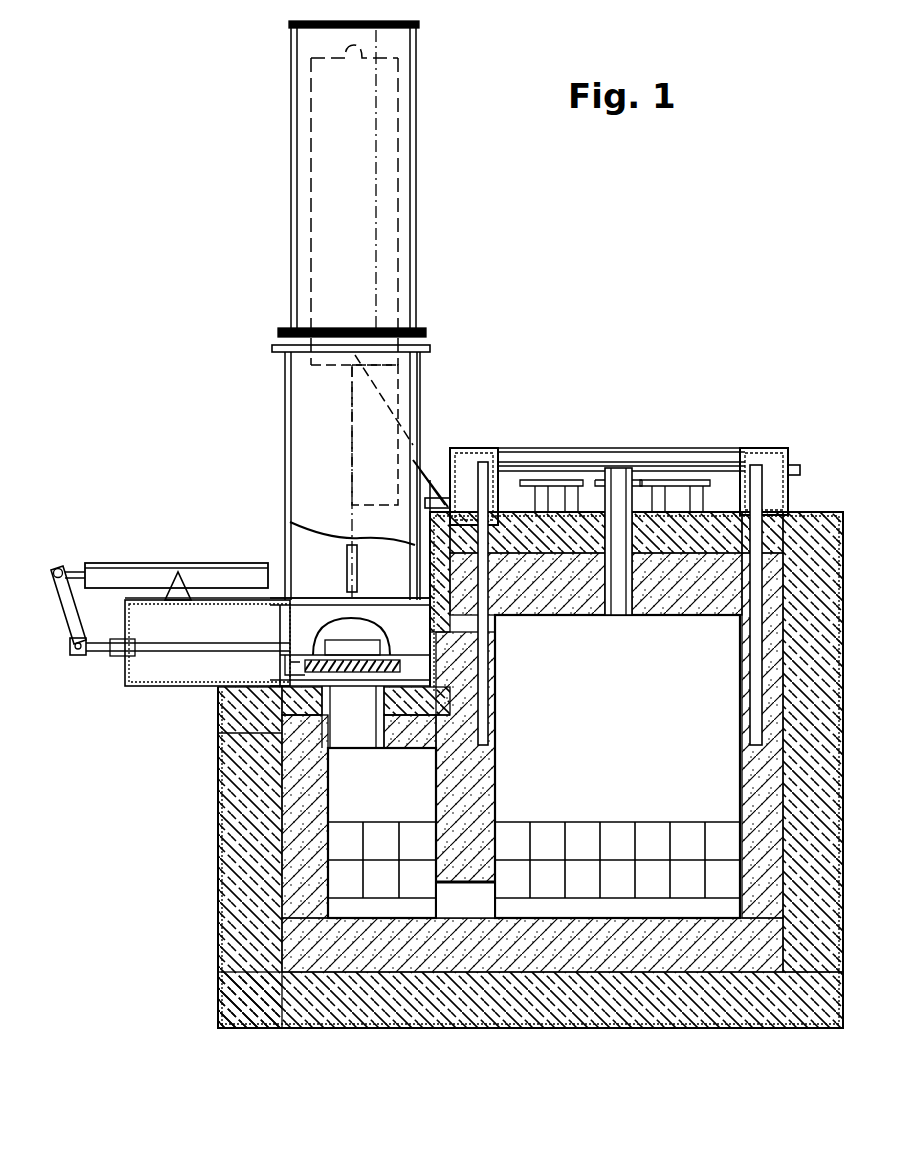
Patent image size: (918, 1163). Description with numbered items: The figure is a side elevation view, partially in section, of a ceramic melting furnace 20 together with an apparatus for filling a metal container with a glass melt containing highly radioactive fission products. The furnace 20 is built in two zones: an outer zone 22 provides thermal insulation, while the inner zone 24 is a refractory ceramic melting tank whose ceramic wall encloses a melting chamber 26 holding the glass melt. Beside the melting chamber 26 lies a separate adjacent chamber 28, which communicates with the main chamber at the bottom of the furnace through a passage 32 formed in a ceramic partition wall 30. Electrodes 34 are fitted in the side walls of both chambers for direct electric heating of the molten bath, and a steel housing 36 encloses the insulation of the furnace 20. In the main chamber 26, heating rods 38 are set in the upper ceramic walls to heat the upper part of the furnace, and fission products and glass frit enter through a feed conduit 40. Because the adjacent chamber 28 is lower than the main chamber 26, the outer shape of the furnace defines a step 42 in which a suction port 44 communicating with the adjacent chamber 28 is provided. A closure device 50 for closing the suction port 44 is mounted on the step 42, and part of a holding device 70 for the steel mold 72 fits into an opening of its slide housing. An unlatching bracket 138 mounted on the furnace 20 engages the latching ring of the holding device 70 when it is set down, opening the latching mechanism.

The furnace 20 is at (208, 798).
The outer zone 22 is at (245, 826).
The inner zone 24 is at (300, 887).
The melting chamber 26 is at (608, 768).
The adjacent chamber 28 is at (370, 801).
The partition wall 30 is at (445, 884).
The passage 32 is at (470, 905).
The electrodes 34 is at (335, 848).
The steel housing 36 is at (218, 772).
The heating rods 38 is at (484, 462).
The feed conduit 40 is at (620, 490).
The step 42 is at (290, 690).
The suction port 44 is at (350, 730).
The closure device 50 is at (217, 556).
The holding device 70 is at (283, 126).
The steel mold 72 is at (312, 228).
The unlatching bracket 138 is at (427, 490).